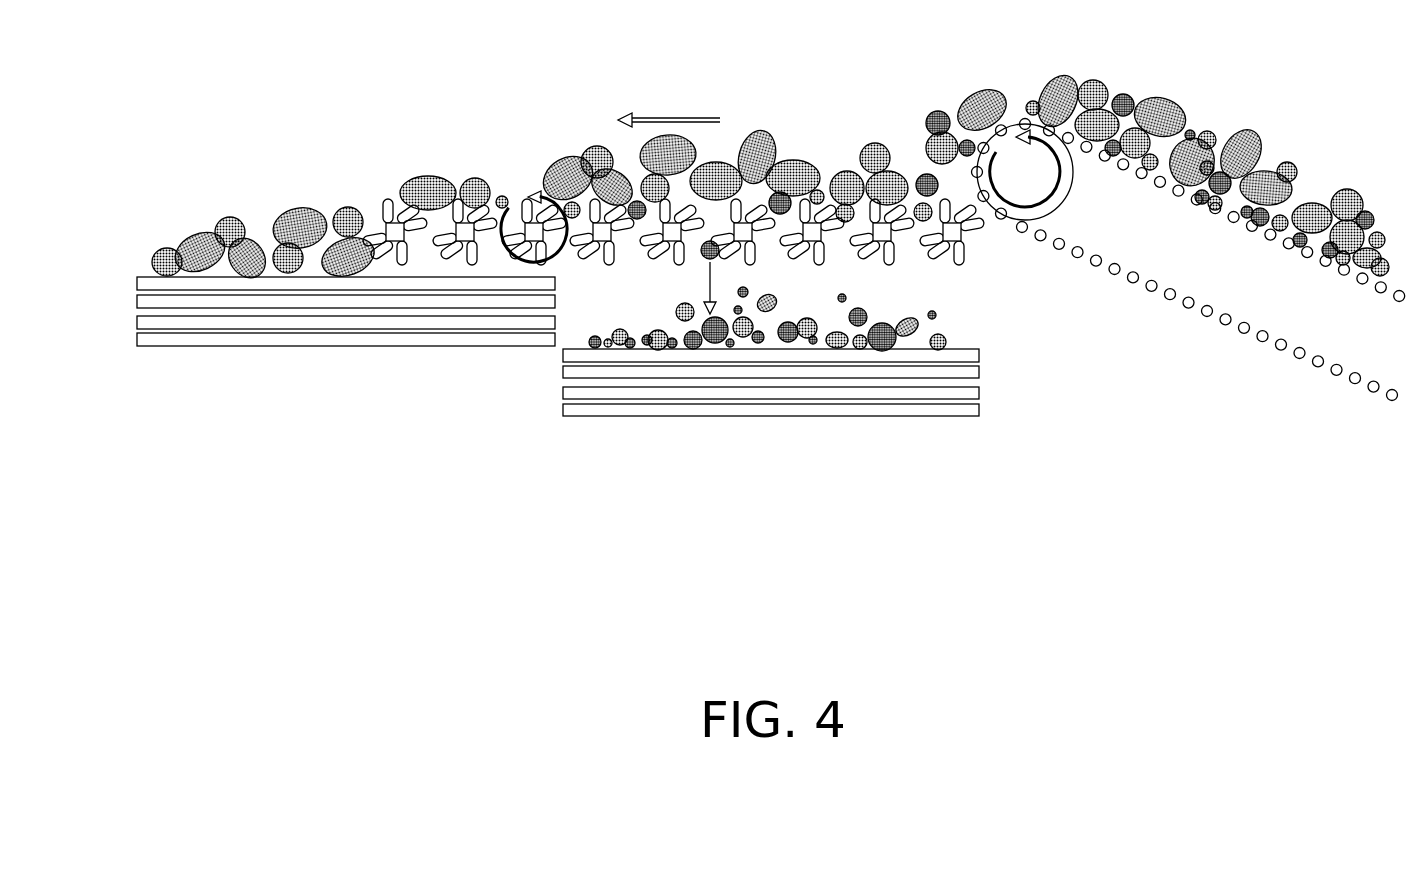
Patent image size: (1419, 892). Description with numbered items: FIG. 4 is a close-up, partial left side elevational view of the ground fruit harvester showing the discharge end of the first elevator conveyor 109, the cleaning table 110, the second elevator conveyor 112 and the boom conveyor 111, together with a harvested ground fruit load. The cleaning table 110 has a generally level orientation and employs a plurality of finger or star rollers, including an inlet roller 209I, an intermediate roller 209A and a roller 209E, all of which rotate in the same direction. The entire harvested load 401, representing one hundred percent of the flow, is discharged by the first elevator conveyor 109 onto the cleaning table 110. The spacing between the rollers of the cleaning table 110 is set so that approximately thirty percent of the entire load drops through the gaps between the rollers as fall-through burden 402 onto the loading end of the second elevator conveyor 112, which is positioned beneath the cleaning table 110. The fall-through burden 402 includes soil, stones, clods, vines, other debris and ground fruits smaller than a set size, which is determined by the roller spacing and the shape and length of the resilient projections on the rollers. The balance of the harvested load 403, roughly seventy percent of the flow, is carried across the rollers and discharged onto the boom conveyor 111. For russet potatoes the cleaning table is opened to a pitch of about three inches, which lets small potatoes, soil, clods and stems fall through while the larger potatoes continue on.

The balance of the harvested load 403 is at (230, 204).
The finger or star roller 209I is at (392, 230).
The finger or star roller 209A is at (997, 258).
The finger or star roller 209E is at (649, 256).
The harvested load 401 is at (1184, 80).
The fall-through burden 402 is at (940, 323).
The first elevator conveyor 109 is at (1200, 322).
The cleaning table 110 is at (711, 245).
The boom conveyor 111 is at (343, 320).
The second elevator conveyor 112 is at (770, 392).